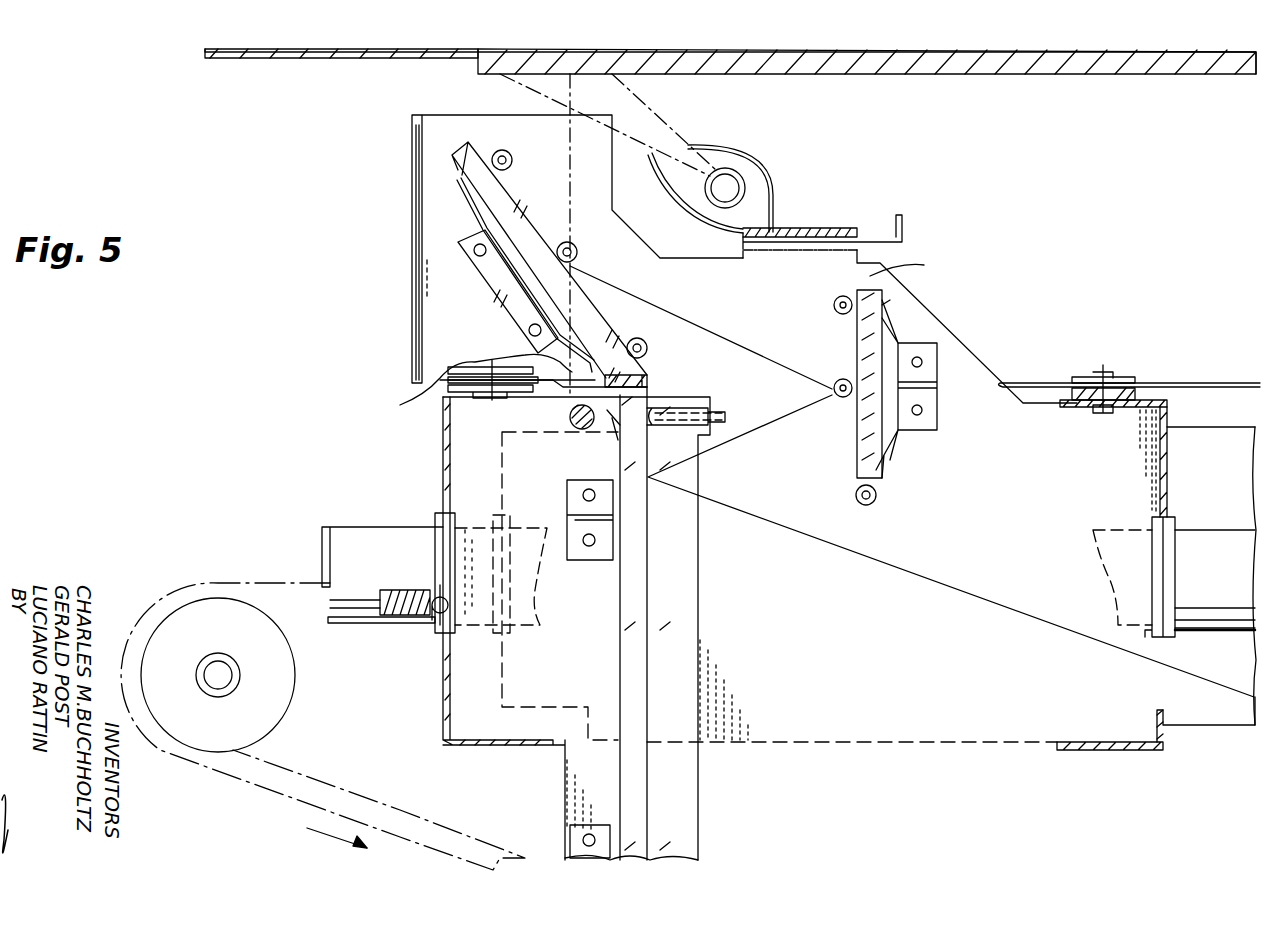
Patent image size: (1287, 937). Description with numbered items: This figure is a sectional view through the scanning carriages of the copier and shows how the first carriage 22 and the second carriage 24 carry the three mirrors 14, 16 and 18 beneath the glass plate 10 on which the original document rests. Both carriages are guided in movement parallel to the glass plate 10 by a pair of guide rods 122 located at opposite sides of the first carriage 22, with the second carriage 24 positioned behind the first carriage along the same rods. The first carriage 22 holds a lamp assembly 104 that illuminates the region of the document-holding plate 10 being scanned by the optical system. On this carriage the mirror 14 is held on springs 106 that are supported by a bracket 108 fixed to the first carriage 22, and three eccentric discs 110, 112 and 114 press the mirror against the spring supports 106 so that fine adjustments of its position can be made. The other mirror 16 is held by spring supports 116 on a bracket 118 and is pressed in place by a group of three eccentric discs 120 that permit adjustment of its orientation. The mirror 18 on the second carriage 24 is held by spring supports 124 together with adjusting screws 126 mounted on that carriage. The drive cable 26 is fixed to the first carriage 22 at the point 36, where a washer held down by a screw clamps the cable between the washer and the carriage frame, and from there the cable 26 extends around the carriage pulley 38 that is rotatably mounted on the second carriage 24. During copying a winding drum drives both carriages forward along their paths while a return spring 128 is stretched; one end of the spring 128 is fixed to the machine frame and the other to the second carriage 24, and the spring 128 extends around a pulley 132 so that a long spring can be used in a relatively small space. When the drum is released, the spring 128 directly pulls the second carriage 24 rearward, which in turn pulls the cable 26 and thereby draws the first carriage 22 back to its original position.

The glass plate 10 is at (1167, 53).
The mirror 14 is at (502, 204).
The mirror 16 is at (874, 280).
The mirror 18 is at (618, 660).
The first carriage 22 is at (406, 217).
The second carriage 24 is at (442, 464).
The cable 26 is at (1210, 381).
The position 36 is at (1105, 372).
The carriage pulley 38 is at (428, 386).
The lamp assembly 104 is at (745, 162).
The springs 106 is at (467, 214).
The bracket 108 is at (492, 282).
The eccentric disc 110 is at (576, 255).
The eccentric disc 112 is at (646, 354).
The eccentric disc 114 is at (510, 152).
The spring supports 116 is at (890, 447).
The bracket 118 is at (931, 428).
The eccentric discs 120 is at (833, 314).
The guide rods 122 is at (1230, 534).
The spring supports 124 is at (618, 471).
The adjusting screws 126 is at (725, 415).
The spring 128 is at (406, 631).
The pulley 132 is at (276, 714).